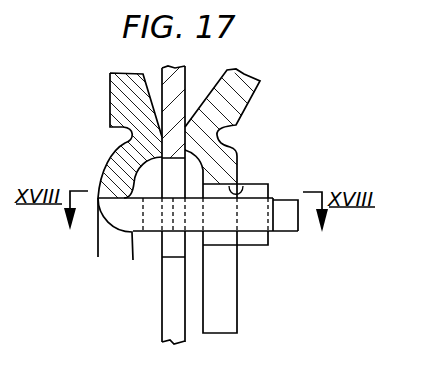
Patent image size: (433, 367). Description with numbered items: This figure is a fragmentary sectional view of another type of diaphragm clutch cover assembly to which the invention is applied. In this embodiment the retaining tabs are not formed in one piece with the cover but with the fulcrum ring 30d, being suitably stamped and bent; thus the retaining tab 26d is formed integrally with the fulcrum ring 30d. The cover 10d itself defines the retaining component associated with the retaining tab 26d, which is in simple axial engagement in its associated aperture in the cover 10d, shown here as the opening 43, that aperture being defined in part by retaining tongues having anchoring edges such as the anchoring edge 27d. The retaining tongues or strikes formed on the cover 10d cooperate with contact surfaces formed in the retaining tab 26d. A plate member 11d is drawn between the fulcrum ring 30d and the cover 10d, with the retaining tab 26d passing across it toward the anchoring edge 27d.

The fulcrum ring 30d is at (104, 91).
The plate 11d is at (193, 85).
The cover 10d is at (253, 102).
The retaining tab 26d is at (233, 222).
The anchoring edge 27d is at (246, 237).
The retaining element 43 is at (233, 190).